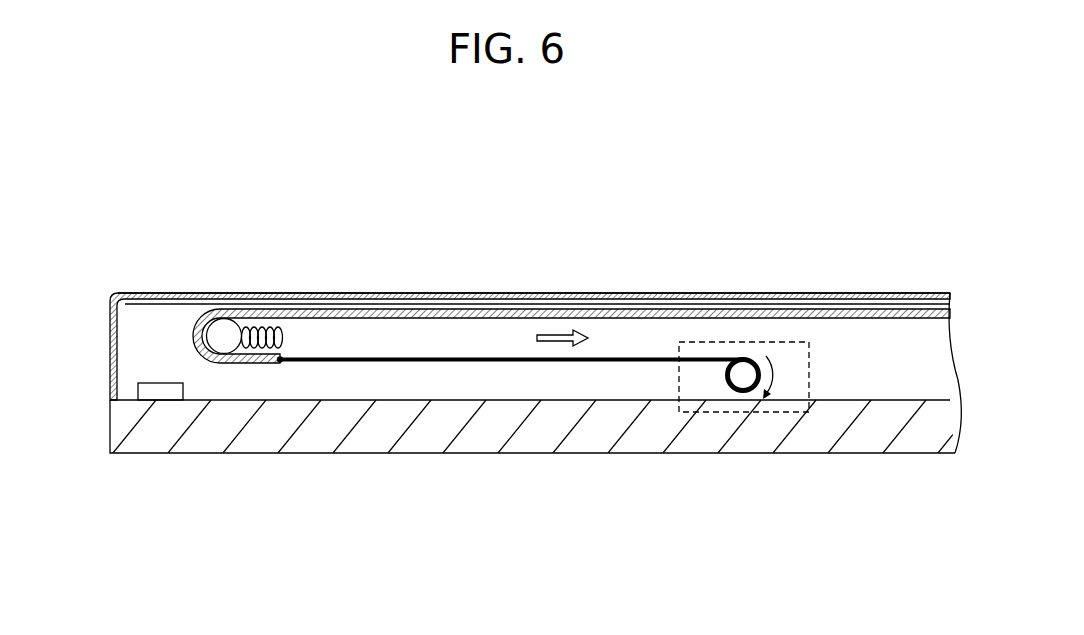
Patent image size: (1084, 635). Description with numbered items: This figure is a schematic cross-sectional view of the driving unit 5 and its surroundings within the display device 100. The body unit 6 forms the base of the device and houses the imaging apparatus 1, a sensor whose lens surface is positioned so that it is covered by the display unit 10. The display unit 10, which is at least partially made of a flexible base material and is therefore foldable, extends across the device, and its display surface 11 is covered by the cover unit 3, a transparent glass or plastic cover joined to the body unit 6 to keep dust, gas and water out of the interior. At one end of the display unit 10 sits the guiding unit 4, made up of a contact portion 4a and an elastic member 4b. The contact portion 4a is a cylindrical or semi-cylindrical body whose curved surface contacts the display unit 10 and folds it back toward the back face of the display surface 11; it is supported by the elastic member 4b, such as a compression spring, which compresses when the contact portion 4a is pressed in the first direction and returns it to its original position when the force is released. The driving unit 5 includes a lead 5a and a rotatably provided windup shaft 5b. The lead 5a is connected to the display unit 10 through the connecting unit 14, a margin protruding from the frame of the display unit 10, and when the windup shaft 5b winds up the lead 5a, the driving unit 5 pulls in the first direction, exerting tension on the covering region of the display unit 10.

The display device 100 is at (136, 206).
The imaging apparatus 1 is at (137, 392).
The cover unit 3 is at (127, 296).
The guiding unit 4 is at (340, 213).
The contact portion 4a is at (222, 325).
The elastic member 4b is at (275, 327).
The driving unit 5 is at (718, 342).
The lead 5a is at (642, 357).
The windup shaft 5b is at (743, 373).
The body unit 6 is at (123, 432).
The display unit 10 is at (575, 304).
The display surface 11 is at (477, 291).
The connecting unit 14 is at (280, 364).